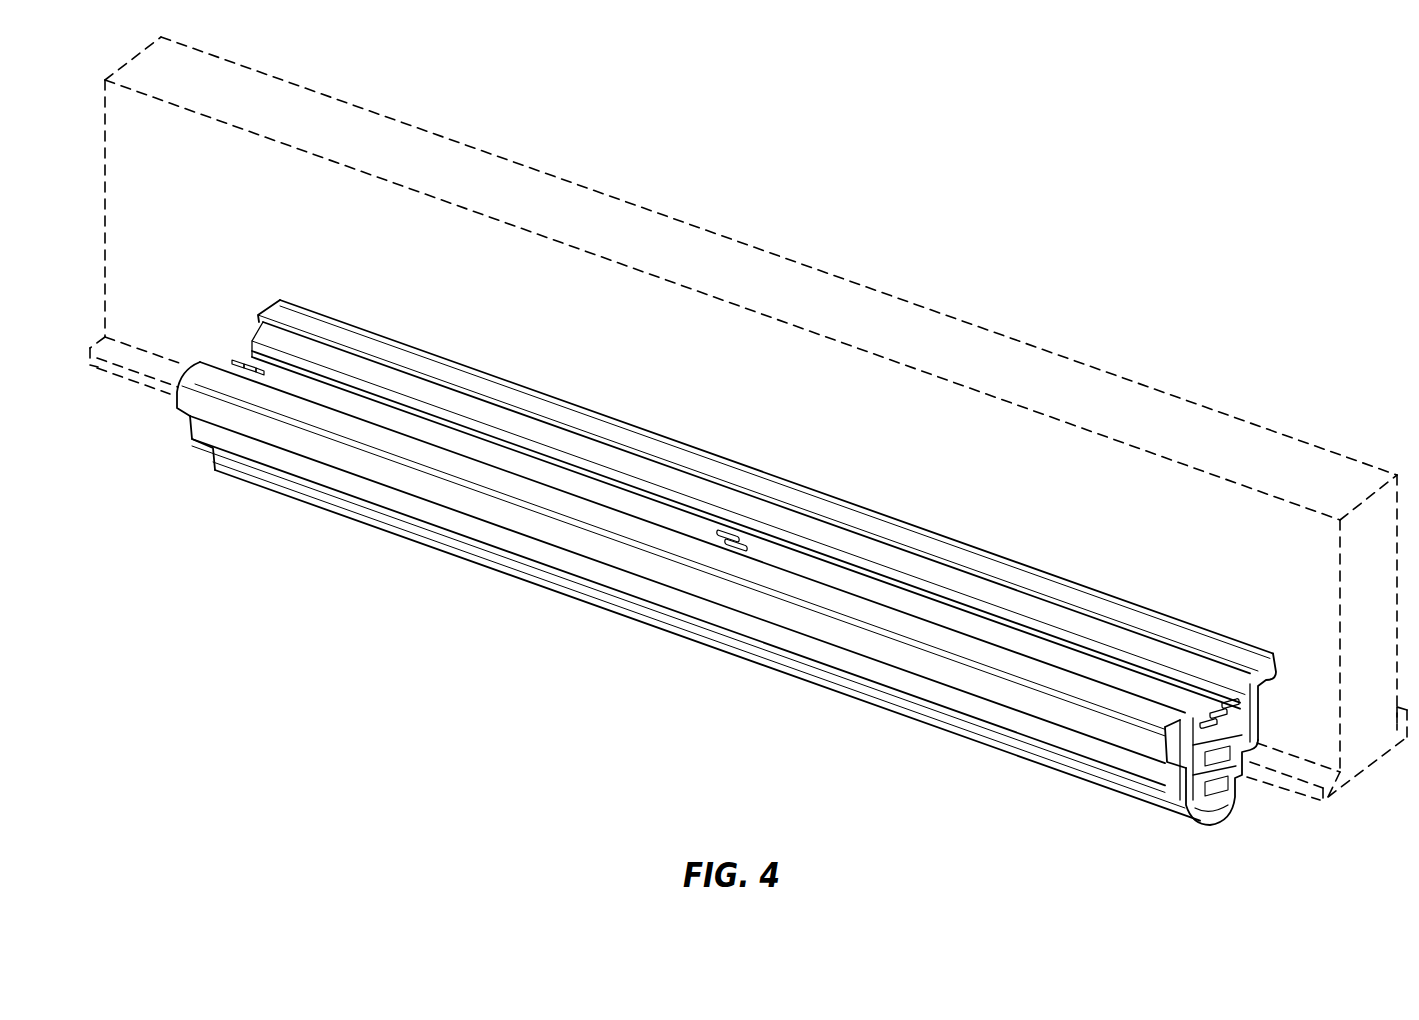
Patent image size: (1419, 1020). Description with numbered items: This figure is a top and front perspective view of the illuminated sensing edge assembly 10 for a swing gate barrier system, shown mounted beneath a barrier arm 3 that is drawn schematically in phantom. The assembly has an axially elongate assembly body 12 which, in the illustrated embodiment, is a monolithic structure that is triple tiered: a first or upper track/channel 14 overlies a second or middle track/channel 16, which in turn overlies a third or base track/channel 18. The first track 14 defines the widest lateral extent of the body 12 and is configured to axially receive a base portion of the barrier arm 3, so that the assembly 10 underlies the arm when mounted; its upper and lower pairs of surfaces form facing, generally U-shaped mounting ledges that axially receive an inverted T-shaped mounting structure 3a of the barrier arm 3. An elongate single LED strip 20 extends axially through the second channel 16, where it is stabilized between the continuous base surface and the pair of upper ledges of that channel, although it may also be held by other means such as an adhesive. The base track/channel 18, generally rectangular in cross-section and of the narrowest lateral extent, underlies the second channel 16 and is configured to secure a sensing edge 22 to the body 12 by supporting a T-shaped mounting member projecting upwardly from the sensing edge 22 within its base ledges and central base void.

The barrier arm 3 is at (1180, 390).
The inverted T-shaped mounting structure 3a is at (1283, 788).
The illuminated sensing edge assembly 10 is at (726, 592).
The assembly body 12 is at (937, 533).
The first track/channel 14 is at (1108, 723).
The second track/channel 16 is at (1167, 765).
The third or base track/channel 18 is at (1193, 793).
The LED strip 20 is at (643, 503).
The sensing edge 22 is at (432, 548).